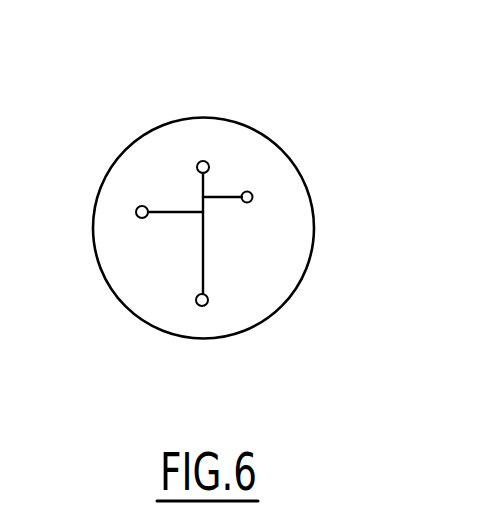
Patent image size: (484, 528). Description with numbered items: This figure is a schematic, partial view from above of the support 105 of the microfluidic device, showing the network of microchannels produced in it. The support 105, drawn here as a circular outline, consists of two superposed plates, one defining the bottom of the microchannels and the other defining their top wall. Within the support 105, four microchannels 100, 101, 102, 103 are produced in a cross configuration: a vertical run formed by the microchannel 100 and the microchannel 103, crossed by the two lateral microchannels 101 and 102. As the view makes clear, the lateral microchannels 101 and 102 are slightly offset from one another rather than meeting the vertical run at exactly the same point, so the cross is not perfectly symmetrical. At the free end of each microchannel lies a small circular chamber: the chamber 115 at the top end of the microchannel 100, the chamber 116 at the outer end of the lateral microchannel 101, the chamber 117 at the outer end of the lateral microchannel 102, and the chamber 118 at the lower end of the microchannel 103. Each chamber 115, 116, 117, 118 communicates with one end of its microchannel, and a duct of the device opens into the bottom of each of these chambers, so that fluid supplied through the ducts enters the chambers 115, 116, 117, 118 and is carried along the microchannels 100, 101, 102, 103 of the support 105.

The support 105 is at (205, 99).
The microchannel 100 is at (207, 179).
The lateral microchannel 101 is at (230, 198).
The lateral microchannel 102 is at (157, 214).
The microchannel 103 is at (205, 270).
The chamber 115 is at (204, 161).
The chamber 116 is at (253, 197).
The chamber 117 is at (137, 209).
The chamber 118 is at (199, 306).